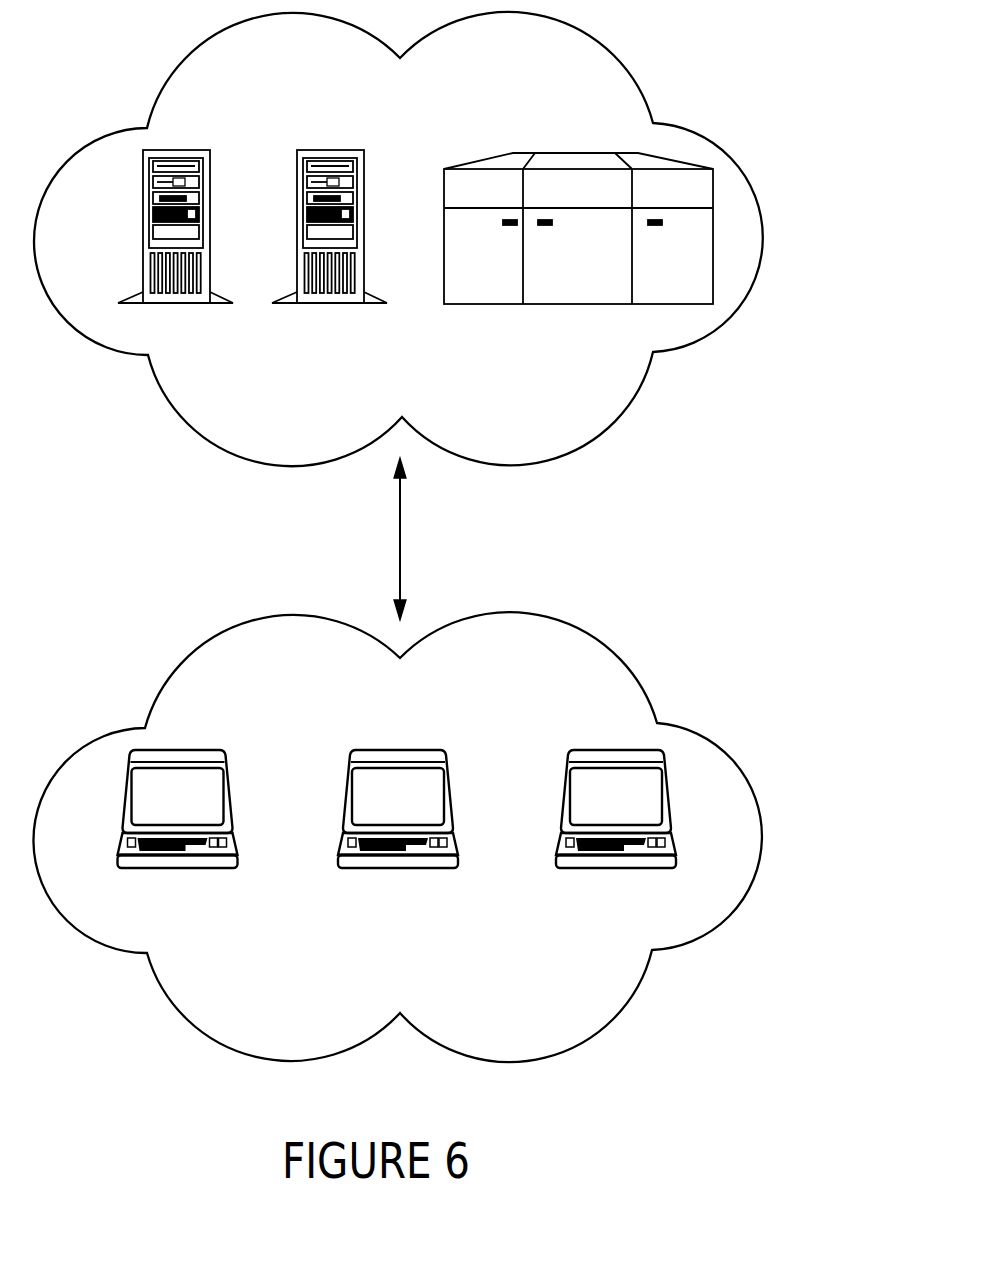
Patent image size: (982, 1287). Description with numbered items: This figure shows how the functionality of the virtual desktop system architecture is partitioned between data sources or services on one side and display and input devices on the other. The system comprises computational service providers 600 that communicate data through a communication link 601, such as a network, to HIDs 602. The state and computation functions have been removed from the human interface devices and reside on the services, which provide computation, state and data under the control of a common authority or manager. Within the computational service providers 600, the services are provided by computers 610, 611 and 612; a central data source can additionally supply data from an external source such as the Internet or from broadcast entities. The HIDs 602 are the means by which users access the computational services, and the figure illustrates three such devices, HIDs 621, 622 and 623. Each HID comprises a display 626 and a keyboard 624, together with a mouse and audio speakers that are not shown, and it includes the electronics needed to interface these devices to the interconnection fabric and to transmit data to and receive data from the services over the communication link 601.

The computational service providers 600 is at (786, 242).
The communication link 601 is at (429, 540).
The HIDs 602 is at (785, 840).
The computer 610 is at (175, 253).
The computer 611 is at (329, 253).
The computer 612 is at (578, 254).
The HID 621 is at (178, 839).
The HID 622 is at (398, 839).
The HID 623 is at (616, 839).
The keyboard 624 is at (247, 841).
The display 626 is at (178, 796).